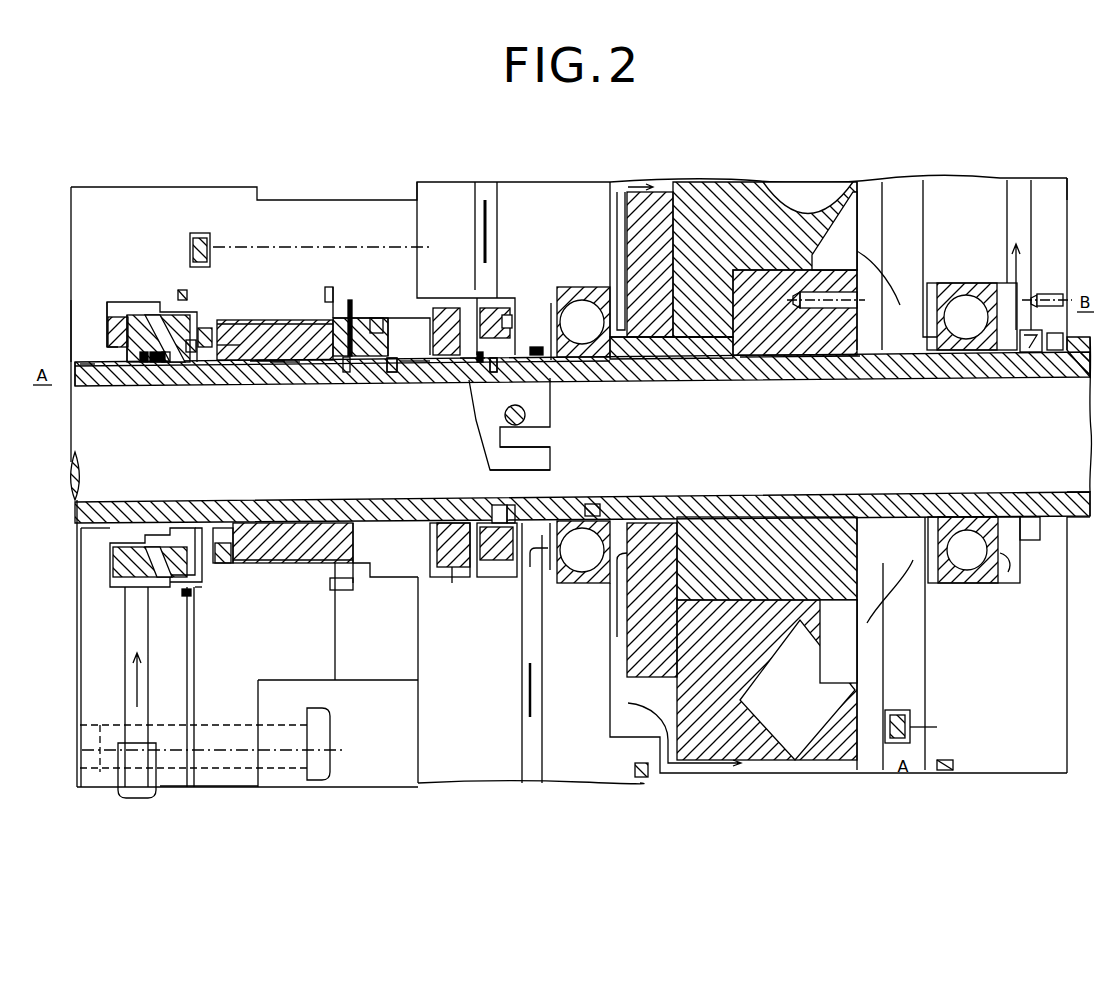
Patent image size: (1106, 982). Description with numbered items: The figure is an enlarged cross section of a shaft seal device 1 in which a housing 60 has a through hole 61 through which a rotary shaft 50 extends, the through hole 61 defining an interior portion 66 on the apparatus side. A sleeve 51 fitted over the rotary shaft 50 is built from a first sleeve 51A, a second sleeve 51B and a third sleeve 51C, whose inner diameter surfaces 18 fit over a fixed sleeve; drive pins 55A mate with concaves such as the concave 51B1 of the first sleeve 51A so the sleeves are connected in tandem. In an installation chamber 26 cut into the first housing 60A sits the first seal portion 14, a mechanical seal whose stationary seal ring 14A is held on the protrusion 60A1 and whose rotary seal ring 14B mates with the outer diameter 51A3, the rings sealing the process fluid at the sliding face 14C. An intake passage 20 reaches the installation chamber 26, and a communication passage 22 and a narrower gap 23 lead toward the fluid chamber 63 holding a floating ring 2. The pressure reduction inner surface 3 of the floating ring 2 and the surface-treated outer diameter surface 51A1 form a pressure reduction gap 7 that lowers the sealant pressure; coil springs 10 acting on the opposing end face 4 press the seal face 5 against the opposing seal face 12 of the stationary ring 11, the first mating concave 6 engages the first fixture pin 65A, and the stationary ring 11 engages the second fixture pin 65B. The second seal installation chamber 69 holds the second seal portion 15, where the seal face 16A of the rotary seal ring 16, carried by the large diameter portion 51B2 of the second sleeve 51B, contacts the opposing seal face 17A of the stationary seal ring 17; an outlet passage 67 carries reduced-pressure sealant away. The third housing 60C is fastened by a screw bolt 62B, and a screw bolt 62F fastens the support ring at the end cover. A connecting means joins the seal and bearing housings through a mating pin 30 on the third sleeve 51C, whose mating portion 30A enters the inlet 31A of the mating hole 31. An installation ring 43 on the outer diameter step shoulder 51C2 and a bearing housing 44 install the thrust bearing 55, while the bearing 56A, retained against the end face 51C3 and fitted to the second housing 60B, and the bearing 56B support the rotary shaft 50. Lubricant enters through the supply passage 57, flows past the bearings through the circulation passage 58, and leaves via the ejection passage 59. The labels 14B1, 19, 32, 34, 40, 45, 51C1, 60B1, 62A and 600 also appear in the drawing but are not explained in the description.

The shaft seal device 1 is at (945, 165).
The floating ring 2 is at (313, 337).
The pressure reduction inner surface 3 is at (280, 363).
The opposing end face 4 is at (110, 560).
The seal face 5 is at (378, 318).
The first mating concave 6 is at (205, 700).
The pressure reduction gap 7 is at (267, 363).
The coil springs 10 is at (203, 325).
The stationary ring 11 is at (440, 317).
The opposing seal face 12 is at (350, 300).
The first seal portion 14 is at (128, 300).
The stationary seal ring 14A is at (107, 305).
The rotary seal ring 14B is at (157, 308).
The seal lip 14B1 is at (145, 362).
The sliding face 14C is at (150, 315).
The second seal portion 15 is at (620, 192).
The rotary seal ring 16 is at (423, 530).
The seal face 16A is at (507, 533).
The stationary seal ring 17 is at (475, 567).
The opposing seal face 17A is at (460, 530).
The inner diameter surface 18 is at (88, 373).
The seal element 19 is at (447, 330).
The intake passage 20 is at (137, 715).
The communication passage 22 is at (135, 565).
The gap 23 is at (200, 350).
The first seal installation chamber 26 is at (117, 315).
The mating pin 30 is at (537, 520).
The mating portion 30A is at (497, 500).
The mating hole 31 is at (507, 442).
The inlet 31A is at (513, 455).
The pin 32 is at (510, 500).
The spacer ring 34 is at (167, 363).
The housing 40 is at (837, 790).
The installation ring 43 is at (672, 270).
The bearing housing 44 is at (723, 210).
The end cap 45 is at (1080, 520).
The rotary shaft 50 is at (943, 443).
The sleeve 51 is at (72, 505).
The first sleeve 51A is at (208, 365).
The outer diameter surface 51A1 is at (222, 565).
The outer diameter 51A3 is at (235, 347).
The second sleeve 51B is at (415, 363).
The concave 51B1 is at (350, 362).
The large diameter portion 51B2 is at (408, 563).
The third sleeve 51C is at (777, 365).
The shaft groove 51C1 is at (473, 362).
The outer diameter step shoulder 51C2 is at (700, 362).
The end face 51C3 is at (593, 508).
The thrust bearing 55 is at (815, 195).
The drive pins 55A is at (490, 372).
The bearing 56A is at (565, 585).
The bearing 56B is at (997, 563).
The supply passage 57 is at (530, 760).
The circulation passage 58 is at (913, 320).
The ejection passage 59 is at (1017, 192).
The housing 60 is at (887, 187).
The first housing 60A is at (168, 799).
The protrusion 60A1 is at (118, 322).
The second housing 60B is at (572, 215).
The bearing race 60B1 is at (520, 320).
The third housing 60C is at (213, 800).
The through hole 61 is at (75, 378).
The bolt 62A is at (318, 782).
The screw bolt 62B is at (208, 232).
The screw bolt 62F is at (912, 735).
The fluid chamber 63 is at (277, 522).
The first fixture pin 65A is at (190, 780).
The second fixture pin 65B is at (395, 323).
The interior portion 66 is at (71, 362).
The outlet passage 67 is at (493, 237).
The second seal installation chamber 69 is at (452, 555).
The housing wall 600 is at (350, 648).